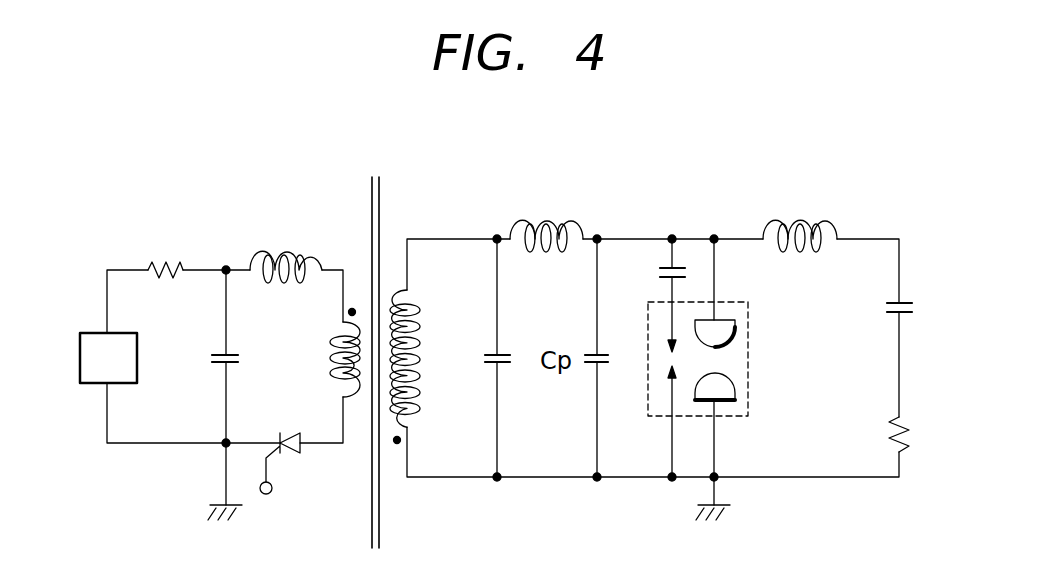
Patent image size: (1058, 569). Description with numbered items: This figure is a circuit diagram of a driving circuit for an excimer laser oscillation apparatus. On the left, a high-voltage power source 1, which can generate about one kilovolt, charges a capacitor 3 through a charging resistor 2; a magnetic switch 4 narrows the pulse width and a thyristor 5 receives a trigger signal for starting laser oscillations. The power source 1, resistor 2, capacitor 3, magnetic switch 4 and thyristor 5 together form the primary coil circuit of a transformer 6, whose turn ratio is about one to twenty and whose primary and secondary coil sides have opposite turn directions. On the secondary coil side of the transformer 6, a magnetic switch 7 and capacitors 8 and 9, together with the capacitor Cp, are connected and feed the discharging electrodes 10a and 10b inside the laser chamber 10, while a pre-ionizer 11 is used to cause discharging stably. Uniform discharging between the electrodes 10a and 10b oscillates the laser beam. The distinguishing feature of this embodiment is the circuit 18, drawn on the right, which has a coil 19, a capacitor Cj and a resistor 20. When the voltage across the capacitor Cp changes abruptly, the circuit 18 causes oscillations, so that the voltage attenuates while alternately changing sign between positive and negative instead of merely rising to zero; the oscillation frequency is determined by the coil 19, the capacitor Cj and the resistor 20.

The high-voltage power source 1 is at (137, 351).
The charging resistor 2 is at (163, 262).
The capacitor 3 is at (238, 359).
The magnetic switch 4 is at (274, 297).
The thyristor 5 is at (283, 435).
The transformer 6 is at (377, 172).
The magnetic switch 7 is at (540, 263).
The capacitor 8 is at (505, 352).
The capacitor 9 is at (660, 275).
The laser chamber 10 is at (733, 337).
The discharging electrode 10a is at (735, 337).
The discharging electrode 10b is at (735, 382).
The pre-ionizer 11 is at (665, 358).
The circuit 18 is at (892, 165).
The coil 19 is at (794, 223).
The resistor 20 is at (906, 418).